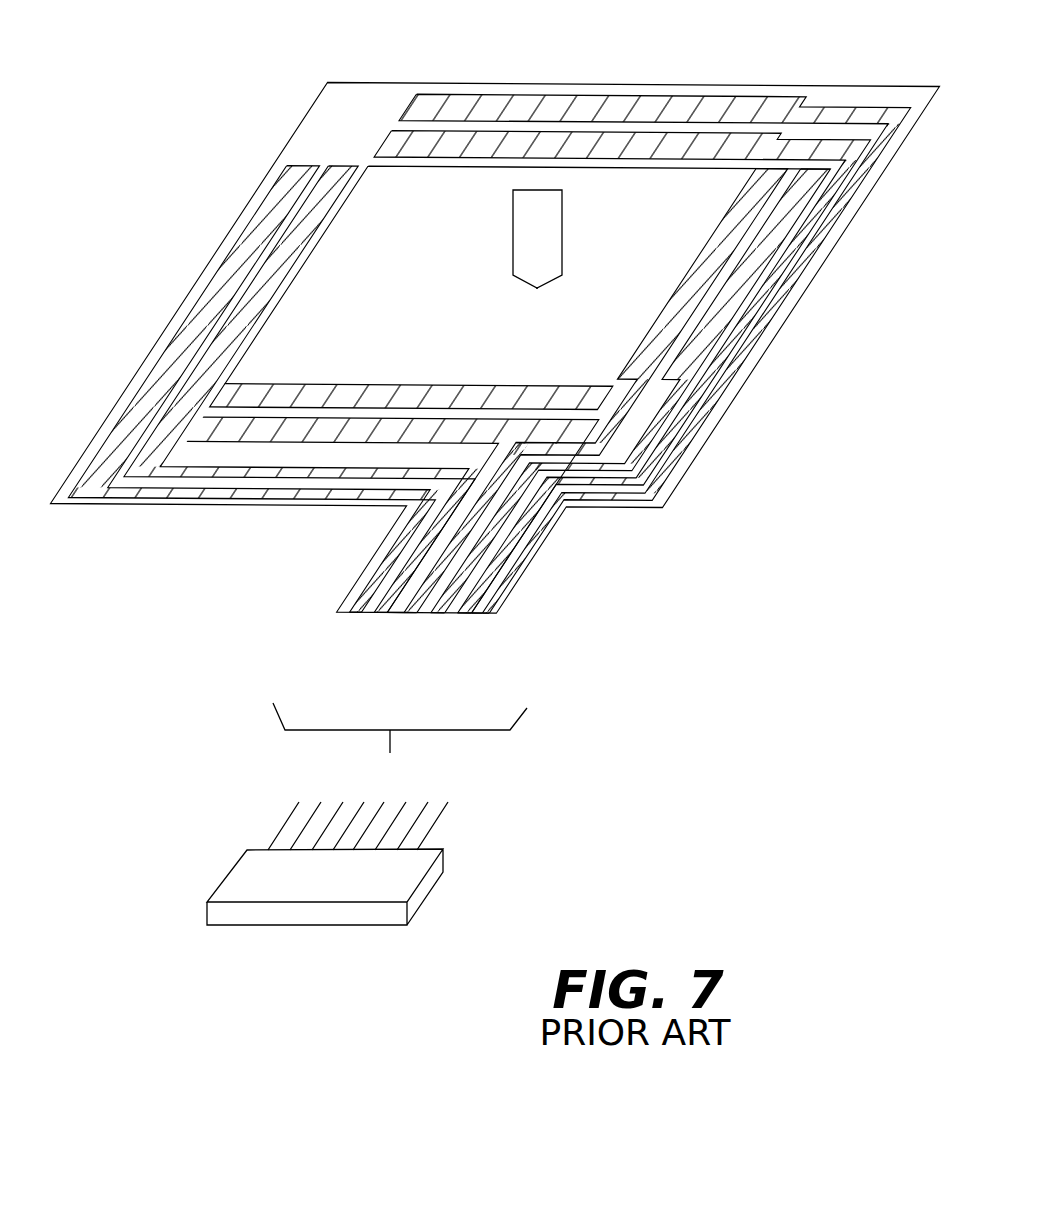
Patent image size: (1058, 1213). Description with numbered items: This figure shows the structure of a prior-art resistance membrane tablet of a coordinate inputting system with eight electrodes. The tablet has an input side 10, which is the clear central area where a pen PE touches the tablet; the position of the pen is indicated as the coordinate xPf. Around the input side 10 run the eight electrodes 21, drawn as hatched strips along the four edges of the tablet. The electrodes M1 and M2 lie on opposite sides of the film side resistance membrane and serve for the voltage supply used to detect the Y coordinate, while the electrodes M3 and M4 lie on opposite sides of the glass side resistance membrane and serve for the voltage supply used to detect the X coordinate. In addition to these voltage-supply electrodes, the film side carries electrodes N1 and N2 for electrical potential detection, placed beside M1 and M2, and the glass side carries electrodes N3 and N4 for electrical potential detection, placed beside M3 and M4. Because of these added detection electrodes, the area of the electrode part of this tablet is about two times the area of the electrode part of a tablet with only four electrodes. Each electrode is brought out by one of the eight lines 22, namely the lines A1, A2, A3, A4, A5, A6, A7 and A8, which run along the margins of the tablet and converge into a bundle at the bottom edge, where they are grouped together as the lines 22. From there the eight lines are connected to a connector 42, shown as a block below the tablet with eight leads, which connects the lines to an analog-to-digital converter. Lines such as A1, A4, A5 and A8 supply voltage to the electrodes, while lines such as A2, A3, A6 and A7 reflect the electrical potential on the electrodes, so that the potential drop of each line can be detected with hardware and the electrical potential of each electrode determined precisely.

The input side 10 is at (343, 255).
The electrodes 21 is at (675, 390).
The lines 22 is at (400, 744).
The connector 42 is at (427, 880).
The pen PE is at (562, 217).
The pen position coordinate xPf is at (540, 305).
The electrode M1 is at (178, 349).
The electrode M2 is at (773, 232).
The electrode M3 is at (367, 440).
The electrode M4 is at (522, 106).
The electrode N1 is at (262, 307).
The electrode N2 is at (740, 268).
The electrode N3 is at (293, 398).
The electrode N4 is at (633, 140).
The line A1 is at (340, 613).
The line A2 is at (360, 613).
The line A3 is at (413, 613).
The line A4 is at (443, 613).
The line A5 is at (390, 613).
The line A6 is at (370, 613).
The line A7 is at (465, 613).
The line A8 is at (482, 613).